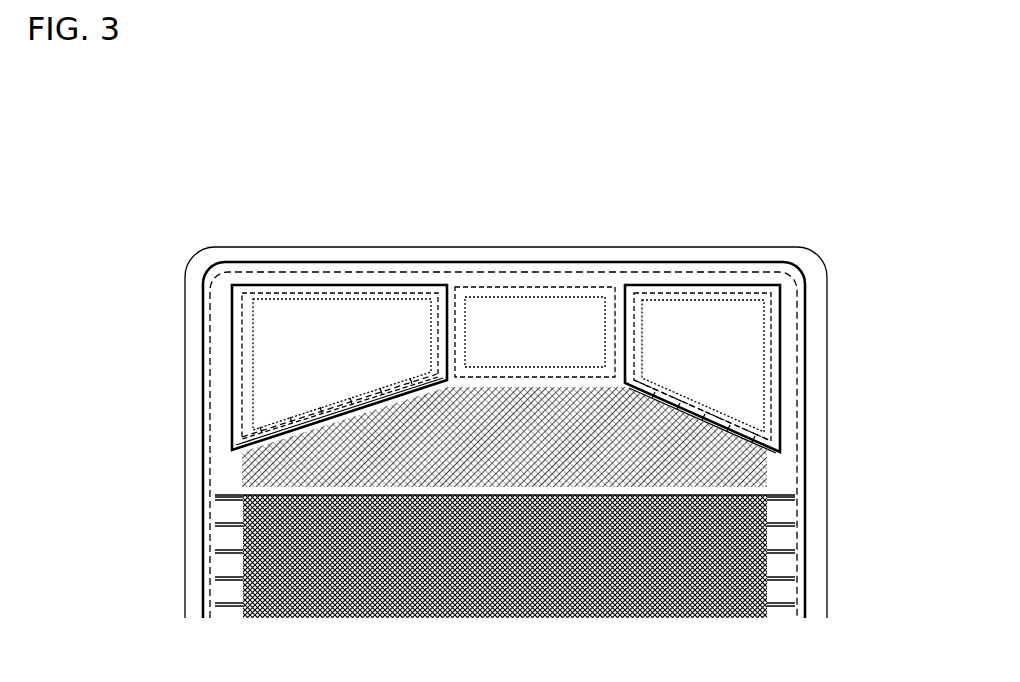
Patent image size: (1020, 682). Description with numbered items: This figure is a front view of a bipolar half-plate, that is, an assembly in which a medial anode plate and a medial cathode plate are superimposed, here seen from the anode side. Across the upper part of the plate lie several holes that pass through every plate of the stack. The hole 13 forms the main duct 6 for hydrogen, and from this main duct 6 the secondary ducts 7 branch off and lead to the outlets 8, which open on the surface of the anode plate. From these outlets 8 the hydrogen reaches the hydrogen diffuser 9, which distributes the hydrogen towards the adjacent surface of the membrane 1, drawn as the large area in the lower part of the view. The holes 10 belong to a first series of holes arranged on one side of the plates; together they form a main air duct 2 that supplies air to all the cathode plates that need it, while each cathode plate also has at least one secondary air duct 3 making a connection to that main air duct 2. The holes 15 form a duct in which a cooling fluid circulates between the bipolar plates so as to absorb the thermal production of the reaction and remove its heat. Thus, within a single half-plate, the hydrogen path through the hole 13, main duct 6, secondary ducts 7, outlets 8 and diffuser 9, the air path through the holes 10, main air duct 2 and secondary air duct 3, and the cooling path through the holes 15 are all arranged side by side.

The membrane 1 is at (270, 580).
The main air duct 2 is at (732, 365).
The secondary air duct 3 is at (735, 410).
The main duct 6 is at (288, 365).
The secondary ducts 7 is at (287, 417).
The outlets 8 is at (245, 443).
The hydrogen diffuser 9 is at (290, 470).
The holes 10 is at (703, 315).
The hole 13 is at (313, 323).
The holes 15 is at (520, 315).